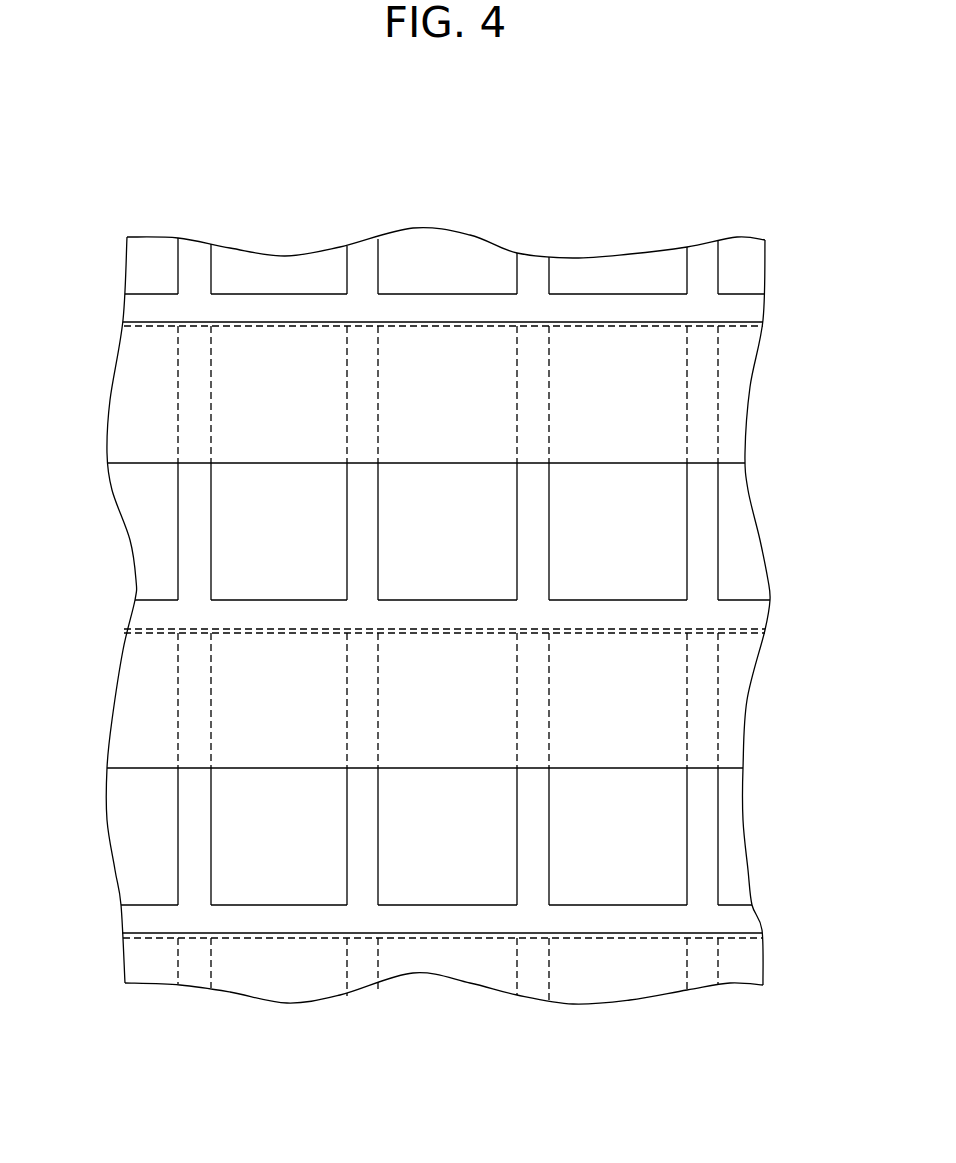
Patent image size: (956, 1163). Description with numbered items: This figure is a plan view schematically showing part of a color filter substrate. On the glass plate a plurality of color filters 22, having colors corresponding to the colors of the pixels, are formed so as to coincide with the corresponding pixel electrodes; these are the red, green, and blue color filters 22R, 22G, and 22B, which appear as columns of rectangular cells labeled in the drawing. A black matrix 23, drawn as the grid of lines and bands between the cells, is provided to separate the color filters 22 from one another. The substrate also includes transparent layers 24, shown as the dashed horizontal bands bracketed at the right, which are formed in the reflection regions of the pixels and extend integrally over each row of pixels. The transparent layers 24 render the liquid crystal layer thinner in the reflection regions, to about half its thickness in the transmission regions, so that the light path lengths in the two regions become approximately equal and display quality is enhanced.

The color filters 22 is at (448, 644).
The red color filter 22R is at (282, 272).
The green color filter 22G is at (448, 253).
The blue color filter 22B is at (615, 270).
The black matrix 23 is at (137, 309).
The transparent layers 24 is at (763, 323).